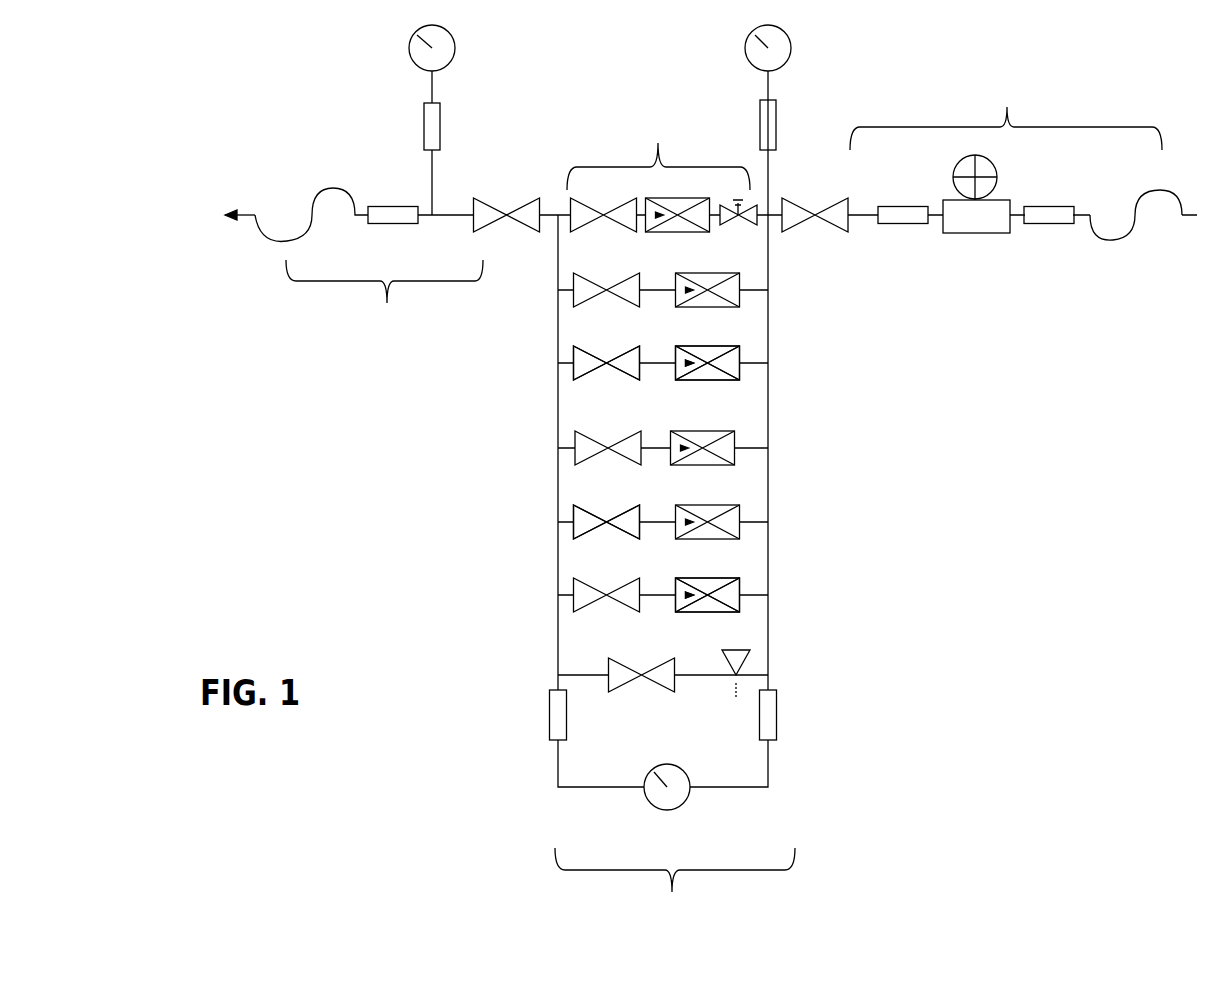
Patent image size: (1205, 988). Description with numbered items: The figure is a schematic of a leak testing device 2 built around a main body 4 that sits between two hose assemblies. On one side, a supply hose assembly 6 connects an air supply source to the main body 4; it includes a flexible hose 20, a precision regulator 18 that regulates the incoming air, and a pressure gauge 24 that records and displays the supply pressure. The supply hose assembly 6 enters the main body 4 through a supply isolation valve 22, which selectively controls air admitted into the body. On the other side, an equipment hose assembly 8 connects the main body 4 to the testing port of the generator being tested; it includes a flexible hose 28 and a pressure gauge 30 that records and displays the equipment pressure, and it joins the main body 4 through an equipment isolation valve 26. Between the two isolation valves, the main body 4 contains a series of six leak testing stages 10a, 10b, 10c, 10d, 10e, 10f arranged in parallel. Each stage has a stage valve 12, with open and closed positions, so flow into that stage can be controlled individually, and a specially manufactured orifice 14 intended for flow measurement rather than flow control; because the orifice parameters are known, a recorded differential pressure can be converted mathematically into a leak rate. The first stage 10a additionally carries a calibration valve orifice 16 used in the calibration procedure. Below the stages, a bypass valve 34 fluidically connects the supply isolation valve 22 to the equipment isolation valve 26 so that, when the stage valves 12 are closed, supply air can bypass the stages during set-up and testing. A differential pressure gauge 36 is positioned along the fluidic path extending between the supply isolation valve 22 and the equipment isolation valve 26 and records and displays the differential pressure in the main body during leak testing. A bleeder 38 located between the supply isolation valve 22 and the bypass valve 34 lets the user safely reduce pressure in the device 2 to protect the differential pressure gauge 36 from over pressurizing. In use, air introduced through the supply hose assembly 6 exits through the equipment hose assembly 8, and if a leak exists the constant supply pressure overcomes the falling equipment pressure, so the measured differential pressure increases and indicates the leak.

The device 2 is at (233, 347).
The main body 4 is at (673, 497).
The supply hose assembly 6 is at (1016, 196).
The equipment hose assembly 8 is at (384, 296).
The first stage 10a is at (662, 149).
The second stage 10b is at (680, 290).
The third stage 10c is at (679, 363).
The fourth stage 10d is at (680, 448).
The fifth stage 10e is at (679, 522).
The sixth stage 10f is at (678, 595).
The stage valve 12 is at (575, 374).
The orifice 14 is at (742, 375).
The calibration valve orifice 16 is at (730, 198).
The precision regulator 18 is at (983, 235).
The flexible hose 20 is at (1130, 242).
The supply isolation valve 22 is at (842, 235).
The pressure gauge 24 is at (793, 55).
The equipment isolation valve 26 is at (480, 200).
The flexible hose 28 is at (256, 205).
The pressure gauge 30 is at (403, 46).
The bypass valve 34 is at (607, 665).
The differential pressure gauge 36 is at (690, 800).
The bleeder 38 is at (752, 664).